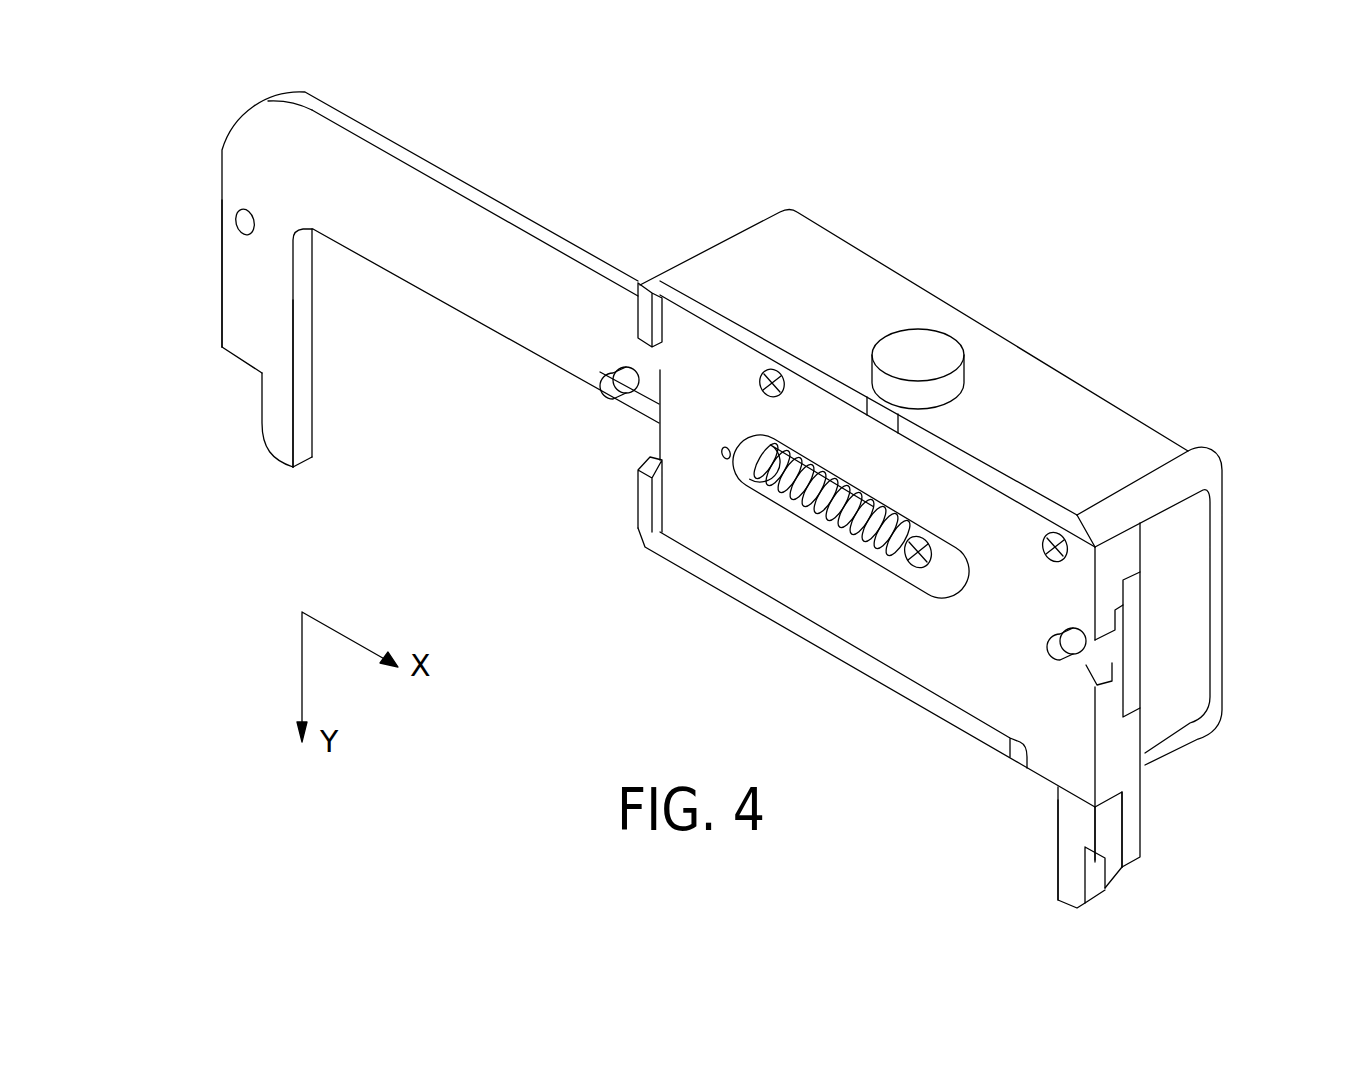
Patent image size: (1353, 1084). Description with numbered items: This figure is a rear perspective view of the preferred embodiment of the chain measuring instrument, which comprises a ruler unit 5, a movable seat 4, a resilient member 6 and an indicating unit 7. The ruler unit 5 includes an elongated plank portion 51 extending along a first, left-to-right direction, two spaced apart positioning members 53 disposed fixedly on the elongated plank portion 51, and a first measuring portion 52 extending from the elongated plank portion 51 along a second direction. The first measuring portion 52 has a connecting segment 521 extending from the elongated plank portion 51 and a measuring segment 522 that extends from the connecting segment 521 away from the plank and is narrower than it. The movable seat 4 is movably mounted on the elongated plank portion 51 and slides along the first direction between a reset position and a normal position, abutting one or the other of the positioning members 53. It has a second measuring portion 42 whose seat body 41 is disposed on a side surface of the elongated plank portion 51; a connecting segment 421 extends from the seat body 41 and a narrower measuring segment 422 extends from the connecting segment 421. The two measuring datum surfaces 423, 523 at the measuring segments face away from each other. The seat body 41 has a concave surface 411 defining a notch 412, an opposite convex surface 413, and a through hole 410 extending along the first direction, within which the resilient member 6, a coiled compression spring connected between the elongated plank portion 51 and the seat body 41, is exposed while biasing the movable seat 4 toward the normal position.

The movable seat 4 is at (1018, 522).
The seat body 41 is at (1027, 572).
The through hole 410 is at (940, 550).
The concave surface 411 is at (1040, 676).
The notch 412 is at (1083, 672).
The convex surface 413 is at (657, 387).
The second measuring portion 42 is at (1073, 830).
The connecting segment 421 is at (1100, 825).
The measuring segment 422 is at (1073, 863).
The measuring datum surface 423 is at (1090, 875).
The ruler unit 5 is at (455, 188).
The elongated plank portion 51 is at (533, 277).
The first measuring portion 52 is at (300, 348).
The connecting segment 521 is at (242, 332).
The measuring segment 522 is at (277, 423).
The measuring datum surface 523 is at (260, 395).
The positioning member 53 is at (613, 402).
The resilient member 6 is at (847, 543).
The indicating unit 7 is at (713, 293).